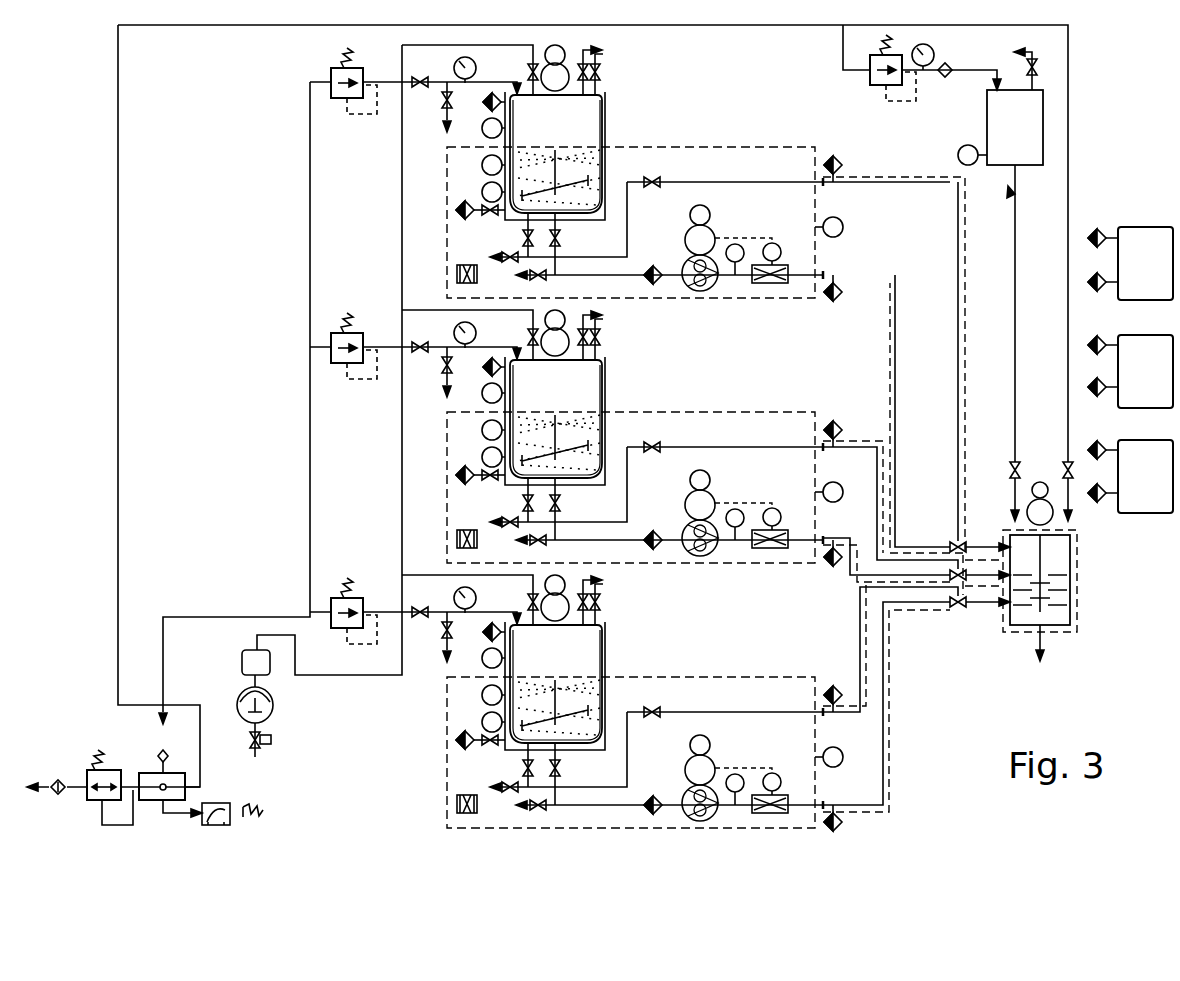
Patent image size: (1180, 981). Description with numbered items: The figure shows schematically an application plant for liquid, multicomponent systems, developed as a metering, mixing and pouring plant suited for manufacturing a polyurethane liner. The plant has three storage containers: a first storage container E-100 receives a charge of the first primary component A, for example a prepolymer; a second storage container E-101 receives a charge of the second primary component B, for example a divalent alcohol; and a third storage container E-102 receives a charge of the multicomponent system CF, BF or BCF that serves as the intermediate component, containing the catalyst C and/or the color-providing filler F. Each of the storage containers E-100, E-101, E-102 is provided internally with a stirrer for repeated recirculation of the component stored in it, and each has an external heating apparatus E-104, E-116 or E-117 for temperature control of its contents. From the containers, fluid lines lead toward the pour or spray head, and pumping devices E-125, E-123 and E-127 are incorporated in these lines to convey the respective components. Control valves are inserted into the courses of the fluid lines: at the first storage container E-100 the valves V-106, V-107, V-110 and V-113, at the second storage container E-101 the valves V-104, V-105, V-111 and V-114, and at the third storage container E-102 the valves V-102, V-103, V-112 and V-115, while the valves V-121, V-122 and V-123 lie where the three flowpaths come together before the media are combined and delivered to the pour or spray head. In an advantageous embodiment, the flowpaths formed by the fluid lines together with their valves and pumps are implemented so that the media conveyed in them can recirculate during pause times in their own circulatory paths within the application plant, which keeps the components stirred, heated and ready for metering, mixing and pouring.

The first storage container E-100 is at (537, 133).
The second storage container E-101 is at (537, 398).
The third storage container E-102 is at (537, 663).
The external heating apparatus E-104 is at (1164, 271).
The external heating apparatus E-116 is at (1164, 379).
The external heating apparatus E-117 is at (1164, 484).
The pumping device E-125 is at (705, 290).
The pumping device E-123 is at (705, 555).
The pumping device E-127 is at (690, 792).
The control valve V-102 is at (601, 602).
The control valve V-103 is at (522, 768).
The control valve V-104 is at (601, 337).
The control valve V-105 is at (522, 503).
The control valve V-106 is at (601, 72).
The control valve V-107 is at (522, 238).
The control valve V-110 is at (561, 238).
The control valve V-111 is at (561, 503).
The control valve V-112 is at (561, 768).
The control valve V-113 is at (656, 180).
The control valve V-114 is at (652, 452).
The control valve V-115 is at (656, 710).
The control valve V-121 is at (953, 545).
The control valve V-122 is at (953, 580).
The control valve V-123 is at (960, 607).